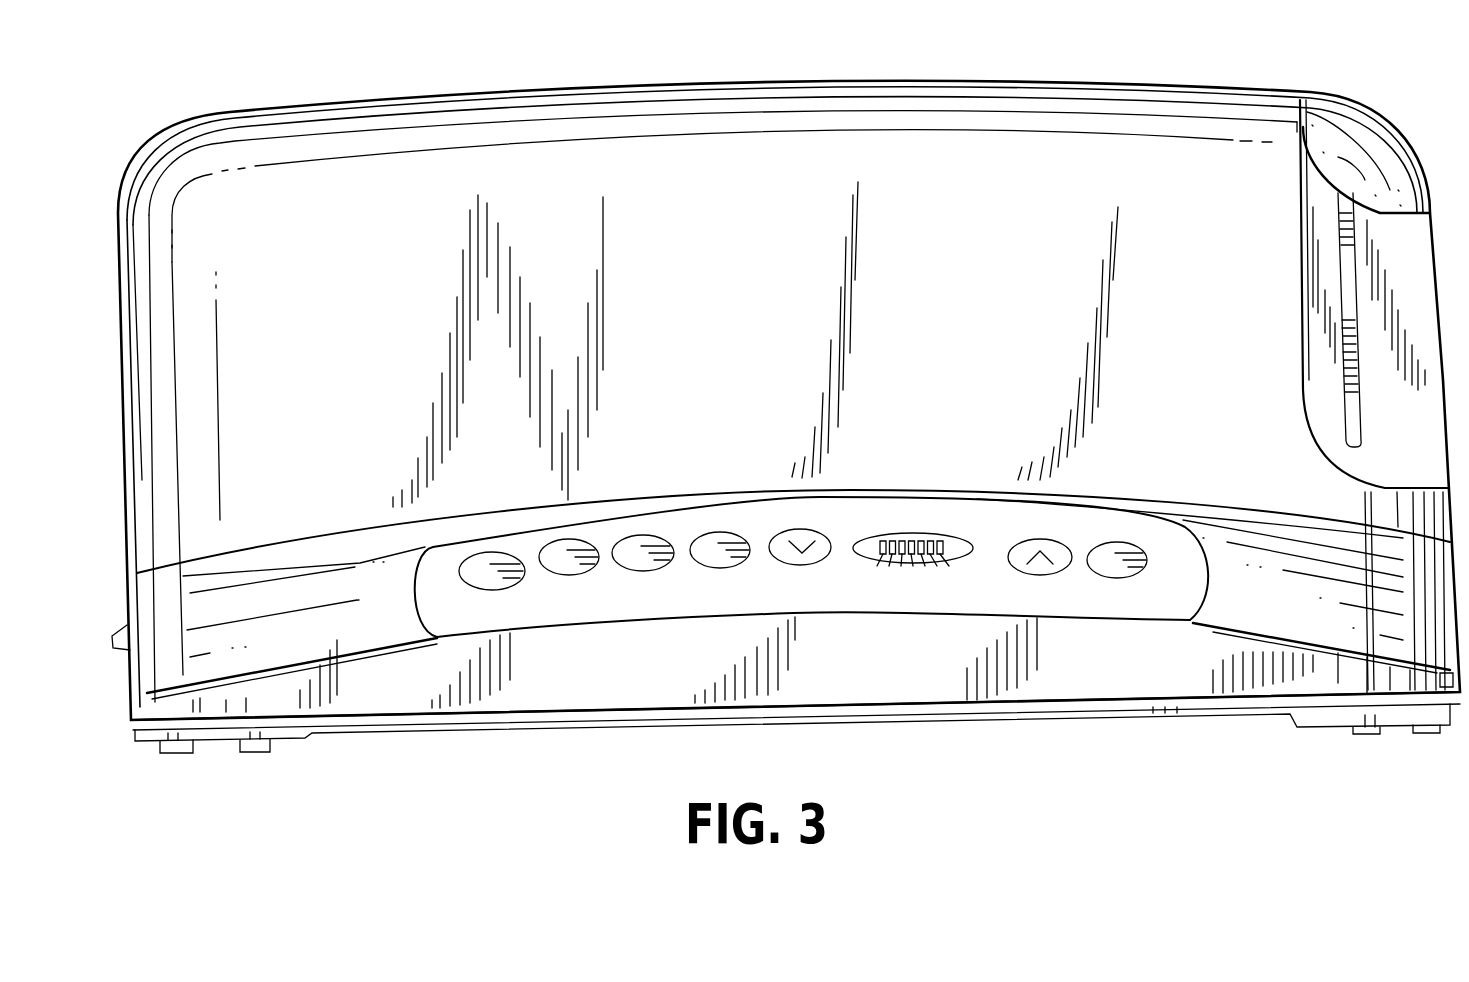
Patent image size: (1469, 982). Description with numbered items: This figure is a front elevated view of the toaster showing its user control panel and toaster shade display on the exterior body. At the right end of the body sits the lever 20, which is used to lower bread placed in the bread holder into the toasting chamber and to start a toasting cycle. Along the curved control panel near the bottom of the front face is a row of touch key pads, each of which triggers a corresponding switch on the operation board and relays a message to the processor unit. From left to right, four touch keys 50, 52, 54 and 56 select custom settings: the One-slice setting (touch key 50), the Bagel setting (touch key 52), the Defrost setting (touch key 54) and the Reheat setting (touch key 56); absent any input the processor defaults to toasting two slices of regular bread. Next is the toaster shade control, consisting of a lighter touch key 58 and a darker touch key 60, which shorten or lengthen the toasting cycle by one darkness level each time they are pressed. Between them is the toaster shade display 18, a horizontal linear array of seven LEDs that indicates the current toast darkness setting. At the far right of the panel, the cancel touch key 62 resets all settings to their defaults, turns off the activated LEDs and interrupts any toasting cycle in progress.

The toaster shade display 18 is at (904, 534).
The lever 20 is at (1393, 142).
The touch key 50 is at (492, 552).
The touch key 52 is at (571, 539).
The touch key 54 is at (638, 535).
The touch key 56 is at (716, 532).
The touch key 58 is at (809, 529).
The touch key 60 is at (1024, 541).
The touch key 62 is at (1120, 543).